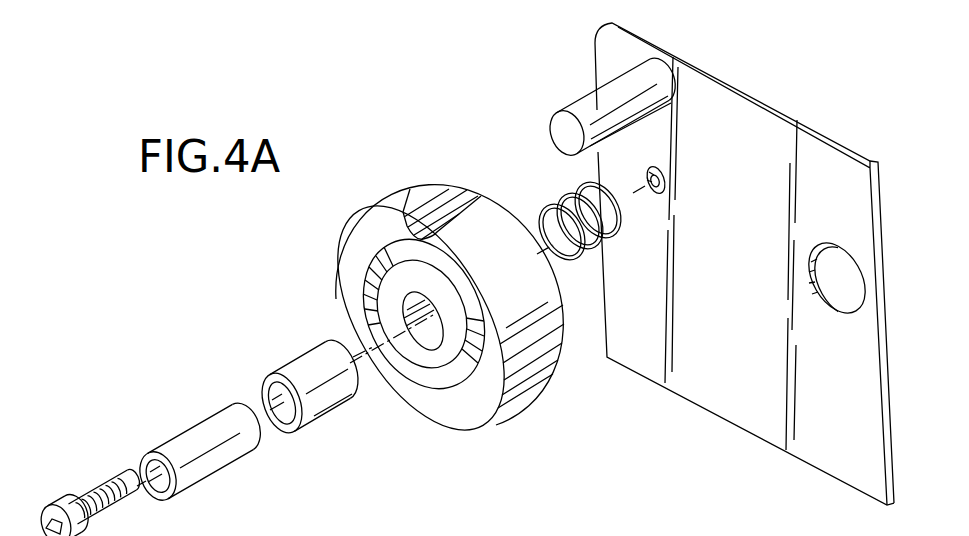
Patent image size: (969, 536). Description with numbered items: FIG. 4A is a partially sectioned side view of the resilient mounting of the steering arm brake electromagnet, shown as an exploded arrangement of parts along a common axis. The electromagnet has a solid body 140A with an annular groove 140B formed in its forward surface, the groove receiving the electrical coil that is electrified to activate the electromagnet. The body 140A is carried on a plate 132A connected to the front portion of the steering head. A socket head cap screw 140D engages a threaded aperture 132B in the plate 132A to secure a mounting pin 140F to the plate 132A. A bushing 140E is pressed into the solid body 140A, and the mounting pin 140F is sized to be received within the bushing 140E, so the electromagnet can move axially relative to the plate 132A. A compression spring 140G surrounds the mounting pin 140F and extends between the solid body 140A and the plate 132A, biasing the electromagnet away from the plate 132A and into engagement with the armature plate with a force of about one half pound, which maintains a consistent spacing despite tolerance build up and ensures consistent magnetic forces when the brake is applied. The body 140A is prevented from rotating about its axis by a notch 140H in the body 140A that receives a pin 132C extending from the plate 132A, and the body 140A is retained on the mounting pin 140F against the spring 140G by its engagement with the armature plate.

The plate 132A is at (735, 397).
The threaded aperture 132B is at (663, 175).
The pin 132C is at (587, 107).
The solid body 140A is at (528, 362).
The annular groove 140B is at (428, 393).
The socket head cap screw 140D is at (90, 507).
The bushing 140E is at (307, 368).
The mounting pin 140F is at (202, 437).
The compression spring 140G is at (558, 202).
The notch 140H is at (413, 213).